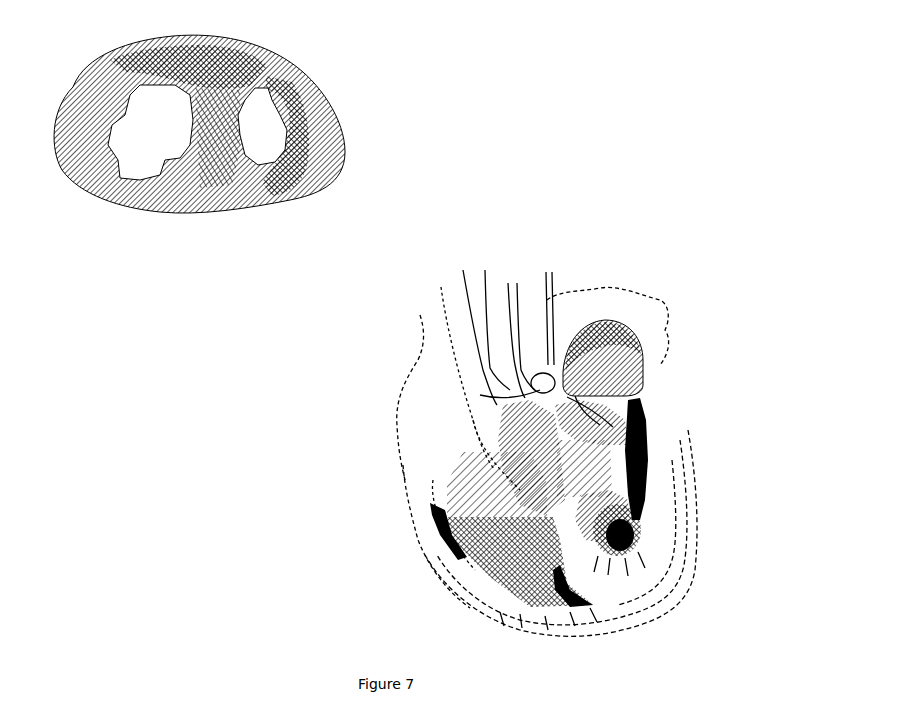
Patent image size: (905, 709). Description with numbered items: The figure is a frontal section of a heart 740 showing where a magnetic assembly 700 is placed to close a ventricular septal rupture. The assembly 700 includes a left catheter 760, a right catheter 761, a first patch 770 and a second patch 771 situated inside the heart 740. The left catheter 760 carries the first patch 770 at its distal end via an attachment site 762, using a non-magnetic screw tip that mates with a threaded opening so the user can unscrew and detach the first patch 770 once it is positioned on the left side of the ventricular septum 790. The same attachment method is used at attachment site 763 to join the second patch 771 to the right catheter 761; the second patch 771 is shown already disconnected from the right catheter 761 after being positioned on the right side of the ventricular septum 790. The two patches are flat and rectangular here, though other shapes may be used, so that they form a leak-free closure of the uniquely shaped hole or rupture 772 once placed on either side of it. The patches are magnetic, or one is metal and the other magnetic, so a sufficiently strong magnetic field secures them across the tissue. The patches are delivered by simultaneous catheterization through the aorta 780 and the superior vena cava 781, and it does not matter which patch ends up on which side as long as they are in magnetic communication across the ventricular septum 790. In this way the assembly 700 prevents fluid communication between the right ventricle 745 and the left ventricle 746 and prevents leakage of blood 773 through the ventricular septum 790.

The magnetic assembly 700 is at (140, 452).
The heart 740 is at (397, 399).
The right ventricle 745 is at (508, 568).
The left ventricle 746 is at (627, 538).
The left catheter 760 is at (505, 318).
The right catheter 761 is at (467, 371).
The attachment site 762 is at (560, 432).
The attachment site 763 is at (533, 477).
The first patch 770 is at (577, 448).
The second patch 771 is at (560, 522).
The hole or rupture 772 is at (253, 52).
The blood 773 is at (590, 488).
The aorta 780 is at (537, 298).
The superior vena cava 781 is at (433, 320).
The ventricular septum 790 is at (540, 470).